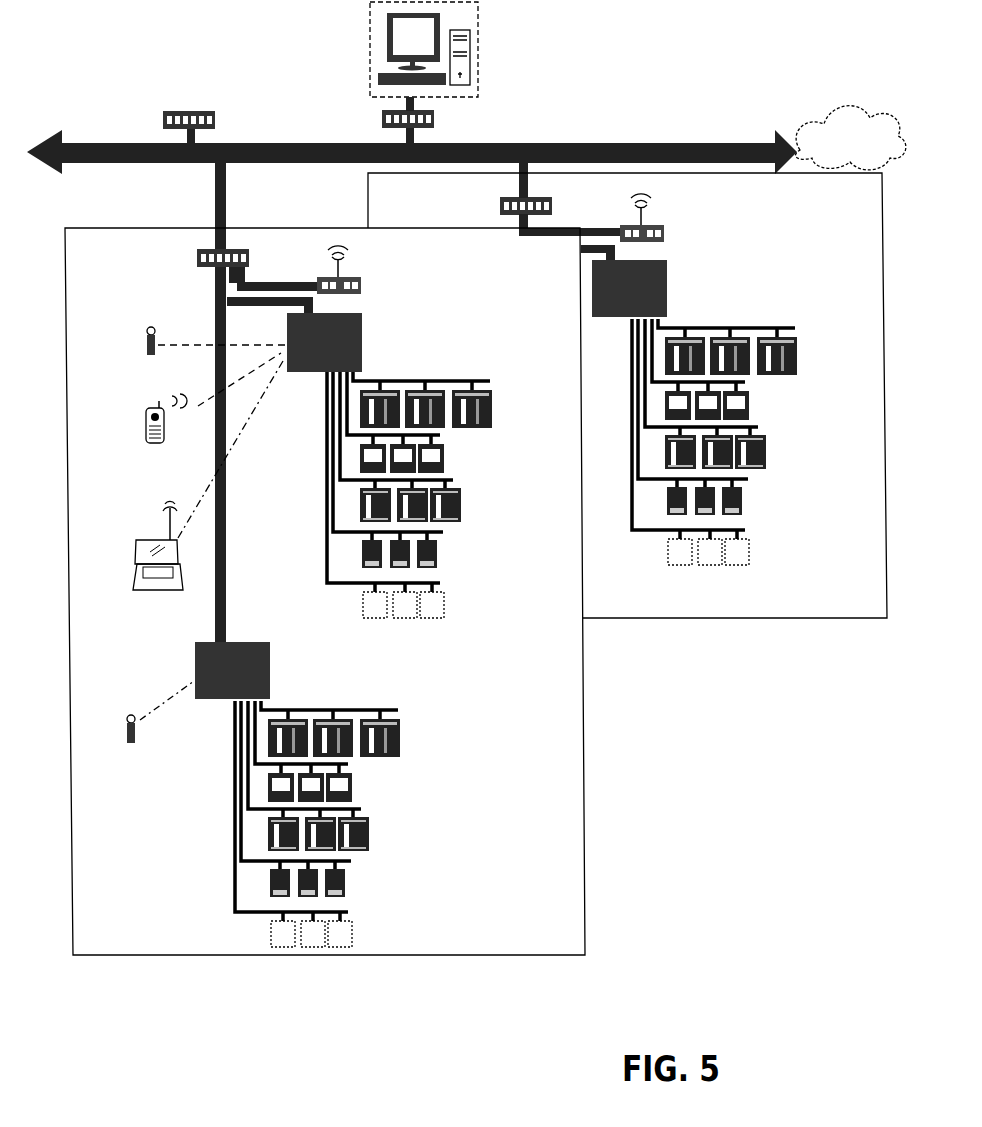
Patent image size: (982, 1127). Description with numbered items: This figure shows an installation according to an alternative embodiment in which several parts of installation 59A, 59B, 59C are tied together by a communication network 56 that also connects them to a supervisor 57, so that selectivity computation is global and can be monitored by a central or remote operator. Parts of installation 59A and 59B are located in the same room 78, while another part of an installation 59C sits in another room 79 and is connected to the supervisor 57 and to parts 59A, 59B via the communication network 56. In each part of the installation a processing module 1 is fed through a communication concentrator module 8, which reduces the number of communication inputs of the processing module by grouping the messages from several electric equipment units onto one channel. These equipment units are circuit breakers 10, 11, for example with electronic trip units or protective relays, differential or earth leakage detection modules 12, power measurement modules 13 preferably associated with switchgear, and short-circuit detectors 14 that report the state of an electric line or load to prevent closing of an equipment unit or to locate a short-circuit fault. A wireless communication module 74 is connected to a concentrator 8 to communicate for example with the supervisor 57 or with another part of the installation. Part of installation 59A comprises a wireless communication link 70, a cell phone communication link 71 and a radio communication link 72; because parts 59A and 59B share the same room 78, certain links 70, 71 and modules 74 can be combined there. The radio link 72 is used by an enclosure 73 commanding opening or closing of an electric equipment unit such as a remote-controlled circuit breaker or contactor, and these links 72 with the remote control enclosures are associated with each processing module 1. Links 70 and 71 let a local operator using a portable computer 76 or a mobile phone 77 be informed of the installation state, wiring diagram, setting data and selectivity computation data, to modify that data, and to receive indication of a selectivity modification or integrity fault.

The processing module 1 is at (362, 345).
The communication concentrator module 8 is at (435, 119).
The circuit breaker 10 is at (502, 411).
The circuit breaker 11 is at (468, 505).
The differential or earth leakage detection module 12 is at (455, 558).
The power measurement module 13 is at (455, 453).
The short-circuit detector 14 is at (455, 599).
The communication network 56 is at (600, 142).
The supervisor 57 is at (478, 62).
The part of installation 59A is at (430, 344).
The part of installation 59B is at (390, 680).
The part of installation 59C is at (744, 282).
The wireless communication link 70 is at (241, 449).
The cell phone communication link 71 is at (188, 417).
The radio communication link 72 is at (172, 334).
The enclosure 73 is at (144, 345).
The wireless communication module 74 is at (362, 286).
The portable computer 76 is at (140, 556).
The mobile phone 77 is at (144, 431).
The room 78 is at (587, 843).
The room 79 is at (778, 618).